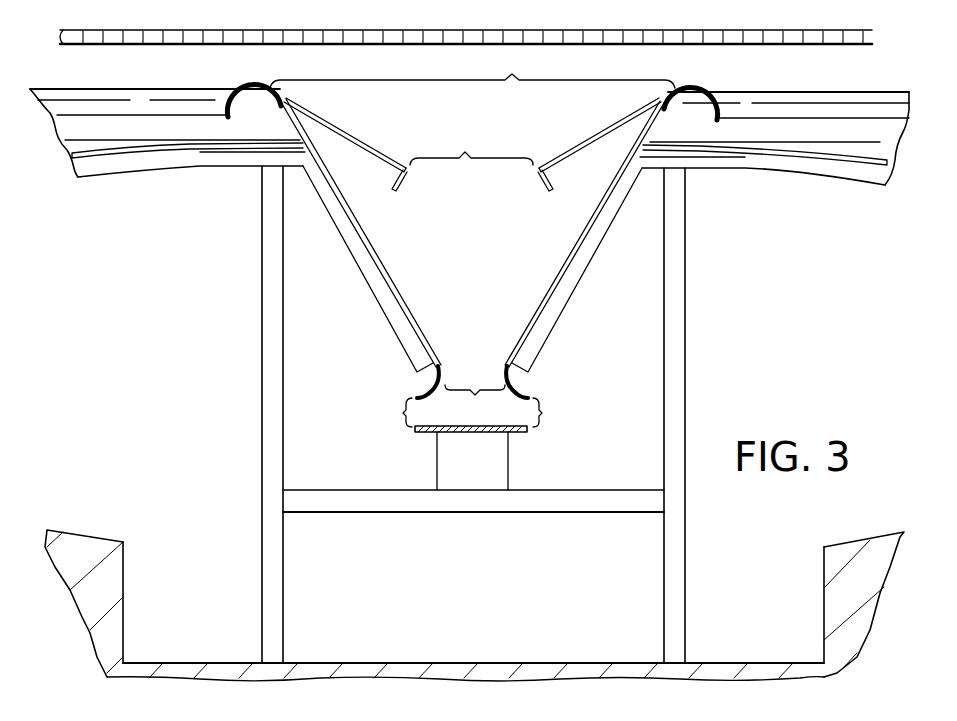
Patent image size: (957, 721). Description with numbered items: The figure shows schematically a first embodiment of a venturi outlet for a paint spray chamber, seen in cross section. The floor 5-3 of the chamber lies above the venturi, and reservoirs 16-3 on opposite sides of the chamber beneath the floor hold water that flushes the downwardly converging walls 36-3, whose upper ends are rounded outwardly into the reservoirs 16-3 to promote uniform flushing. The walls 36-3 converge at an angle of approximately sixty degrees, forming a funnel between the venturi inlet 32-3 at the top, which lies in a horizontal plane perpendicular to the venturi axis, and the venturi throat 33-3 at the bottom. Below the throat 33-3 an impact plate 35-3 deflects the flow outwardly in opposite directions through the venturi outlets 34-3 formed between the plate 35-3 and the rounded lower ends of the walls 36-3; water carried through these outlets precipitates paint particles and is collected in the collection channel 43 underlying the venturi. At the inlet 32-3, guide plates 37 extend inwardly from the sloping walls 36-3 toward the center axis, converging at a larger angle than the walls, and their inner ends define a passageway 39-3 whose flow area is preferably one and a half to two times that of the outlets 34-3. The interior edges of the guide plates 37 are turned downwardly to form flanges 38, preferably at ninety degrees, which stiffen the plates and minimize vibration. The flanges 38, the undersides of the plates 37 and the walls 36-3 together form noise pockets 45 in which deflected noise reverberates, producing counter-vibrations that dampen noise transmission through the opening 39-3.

The floor 5-3 is at (495, 30).
The reservoirs 16-3 is at (121, 101).
The venturi inlet 32-3 is at (472, 68).
The venturi throat 33-3 is at (471, 408).
The venturi outlets 34-3 is at (472, 396).
The impact plate 35-3 is at (445, 437).
The converging walls 36-3 is at (374, 259).
The guide plates 37 is at (335, 132).
The flanges 38 is at (397, 177).
The passageway 39-3 is at (471, 146).
The collection channel 43 is at (123, 604).
The noise pockets 45 is at (345, 156).